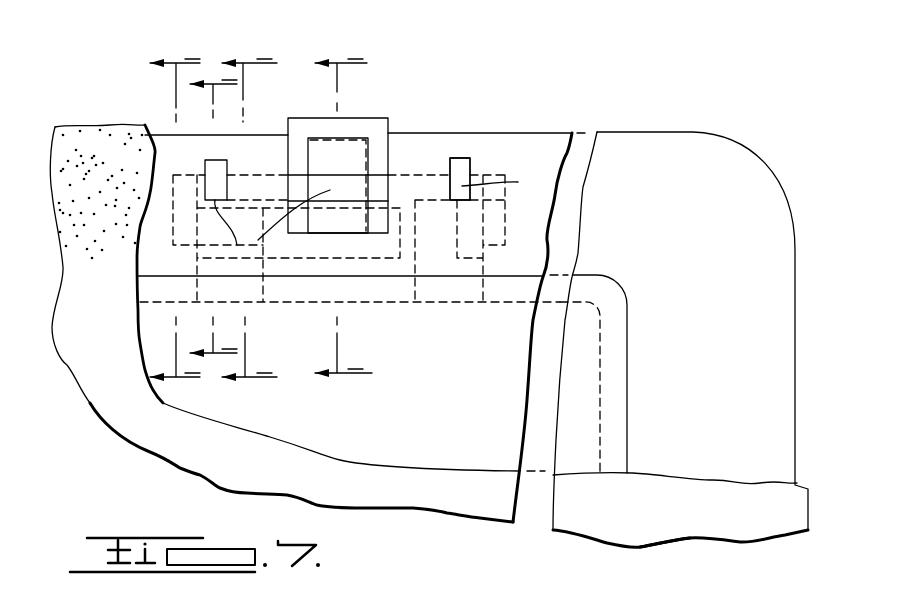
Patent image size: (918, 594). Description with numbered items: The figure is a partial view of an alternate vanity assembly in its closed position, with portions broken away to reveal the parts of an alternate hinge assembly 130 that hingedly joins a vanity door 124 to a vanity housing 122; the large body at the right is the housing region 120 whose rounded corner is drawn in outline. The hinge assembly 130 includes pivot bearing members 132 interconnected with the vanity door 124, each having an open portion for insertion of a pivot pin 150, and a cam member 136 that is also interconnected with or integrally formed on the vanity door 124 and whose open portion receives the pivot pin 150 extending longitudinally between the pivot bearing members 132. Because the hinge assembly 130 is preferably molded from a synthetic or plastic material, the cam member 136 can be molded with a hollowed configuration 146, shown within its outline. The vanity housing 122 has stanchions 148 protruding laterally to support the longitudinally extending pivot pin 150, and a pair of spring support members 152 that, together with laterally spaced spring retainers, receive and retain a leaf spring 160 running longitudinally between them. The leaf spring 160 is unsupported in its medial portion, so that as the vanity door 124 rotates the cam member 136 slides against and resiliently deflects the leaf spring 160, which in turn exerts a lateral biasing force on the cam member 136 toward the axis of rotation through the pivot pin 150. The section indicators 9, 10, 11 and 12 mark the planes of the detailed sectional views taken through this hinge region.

The section line 9- 9 is at (128, 64).
The section line 10- 10 is at (207, 82).
The section line 11- 11 is at (249, 224).
The section line 12- 12 is at (343, 223).
The housing body 120 is at (683, 156).
The vanity housing 122 is at (617, 320).
The vanity door 124 is at (713, 462).
The hinge assembly 130 is at (527, 108).
The pivot bearing members 132 is at (215, 170).
The cam member 136 is at (396, 122).
The hollowed configuration 146 is at (315, 147).
The stanchions 148 is at (188, 237).
The pivot pin 150 is at (242, 173).
The spring support members 152 is at (290, 215).
The leaf spring 160 is at (200, 217).